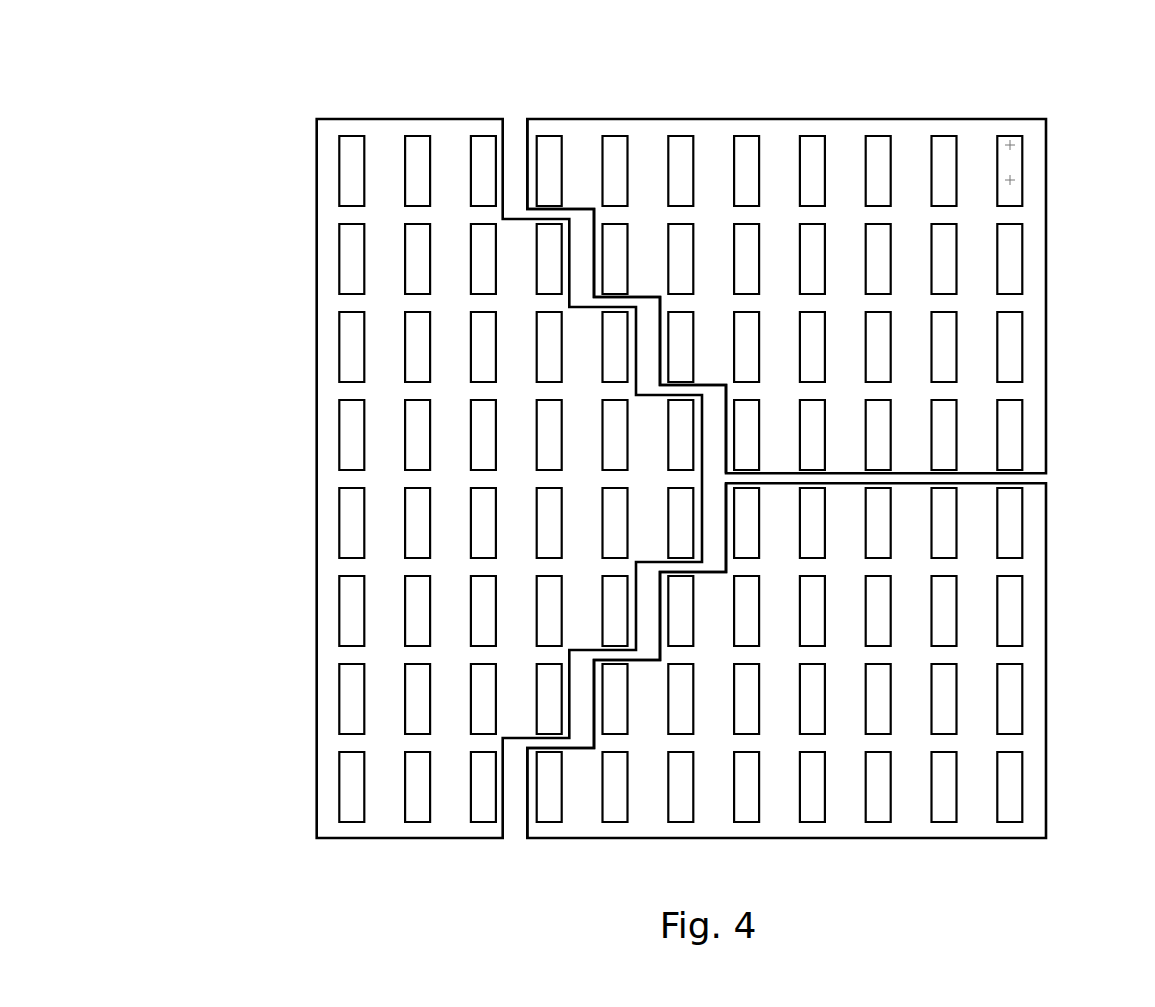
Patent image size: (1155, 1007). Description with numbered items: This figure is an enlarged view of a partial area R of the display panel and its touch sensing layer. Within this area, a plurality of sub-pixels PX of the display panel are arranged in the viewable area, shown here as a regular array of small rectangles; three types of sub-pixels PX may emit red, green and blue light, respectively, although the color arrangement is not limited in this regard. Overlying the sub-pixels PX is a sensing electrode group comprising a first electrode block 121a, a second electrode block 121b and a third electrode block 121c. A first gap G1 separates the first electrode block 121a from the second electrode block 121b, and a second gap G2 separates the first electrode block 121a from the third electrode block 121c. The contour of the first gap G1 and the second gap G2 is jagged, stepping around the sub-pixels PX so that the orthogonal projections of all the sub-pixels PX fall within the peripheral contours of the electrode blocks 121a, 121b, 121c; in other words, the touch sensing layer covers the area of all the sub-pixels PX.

The partial area R is at (53, 59).
The first electrode block 121a is at (330, 424).
The second electrode block 121b is at (1043, 301).
The third electrode block 121c is at (1043, 653).
The first gap G1 is at (514, 123).
The second gap G2 is at (515, 835).
The sub-pixel PX is at (1011, 142).